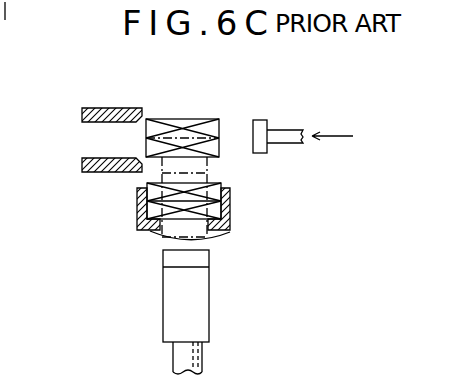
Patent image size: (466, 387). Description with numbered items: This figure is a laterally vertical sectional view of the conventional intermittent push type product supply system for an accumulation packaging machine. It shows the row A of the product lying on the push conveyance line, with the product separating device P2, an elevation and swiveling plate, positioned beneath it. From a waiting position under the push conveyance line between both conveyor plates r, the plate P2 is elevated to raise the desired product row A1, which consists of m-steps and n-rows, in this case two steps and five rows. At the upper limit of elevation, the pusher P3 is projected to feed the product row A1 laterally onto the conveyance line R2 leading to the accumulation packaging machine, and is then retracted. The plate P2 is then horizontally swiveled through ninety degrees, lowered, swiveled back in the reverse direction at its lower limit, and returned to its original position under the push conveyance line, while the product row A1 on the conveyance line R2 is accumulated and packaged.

The conveyance line R2 is at (120, 141).
The product row A1 is at (182, 128).
The row of product A is at (234, 173).
The conveyor plates r is at (232, 217).
The product separating device P2 is at (195, 303).
The pusher P3 is at (280, 135).